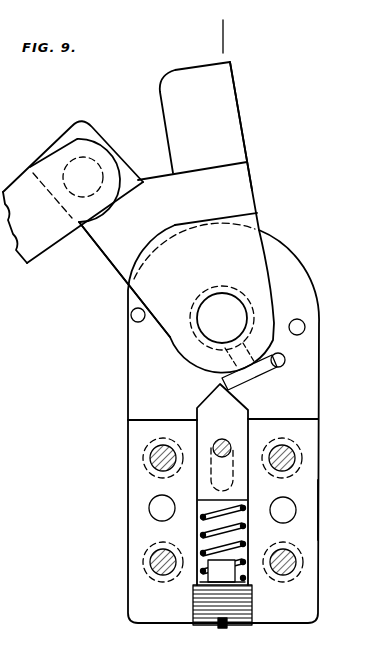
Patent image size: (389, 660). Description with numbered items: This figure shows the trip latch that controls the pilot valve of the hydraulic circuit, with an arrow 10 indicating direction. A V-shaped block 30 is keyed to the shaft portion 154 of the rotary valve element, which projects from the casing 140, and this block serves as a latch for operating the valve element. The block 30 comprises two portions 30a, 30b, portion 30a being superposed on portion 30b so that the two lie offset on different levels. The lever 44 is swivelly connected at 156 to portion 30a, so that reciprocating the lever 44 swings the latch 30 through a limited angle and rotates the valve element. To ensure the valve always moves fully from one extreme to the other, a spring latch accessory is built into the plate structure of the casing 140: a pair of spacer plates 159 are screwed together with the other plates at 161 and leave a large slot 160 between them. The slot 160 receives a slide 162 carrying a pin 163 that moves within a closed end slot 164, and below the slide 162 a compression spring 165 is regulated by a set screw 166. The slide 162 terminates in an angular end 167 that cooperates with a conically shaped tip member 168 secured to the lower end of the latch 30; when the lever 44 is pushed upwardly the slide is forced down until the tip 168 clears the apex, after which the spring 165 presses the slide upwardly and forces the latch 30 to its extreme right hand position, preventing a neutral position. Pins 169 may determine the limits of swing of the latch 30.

The direction arrow / apparatus 10 is at (253, 43).
The V-shaped block 30 is at (176, 217).
The portion of the block 30a is at (106, 224).
The portion of the block 30b is at (232, 130).
The lever 44 is at (73, 192).
The casing 140 is at (302, 290).
The shaft portion of smaller diameter 154 is at (230, 307).
The swivel connection 156 is at (97, 167).
The spacer plates 159 is at (313, 512).
The slot 160 is at (207, 525).
The screws 161 is at (297, 457).
The slide 162 is at (247, 450).
The pin 163 is at (227, 431).
The closed end slot 164 is at (208, 473).
The compression spring 165 is at (242, 510).
The set screw 166 is at (252, 607).
The angular end 167 is at (208, 395).
The conically shaped tip member 168 is at (255, 387).
The pins 169 is at (133, 319).